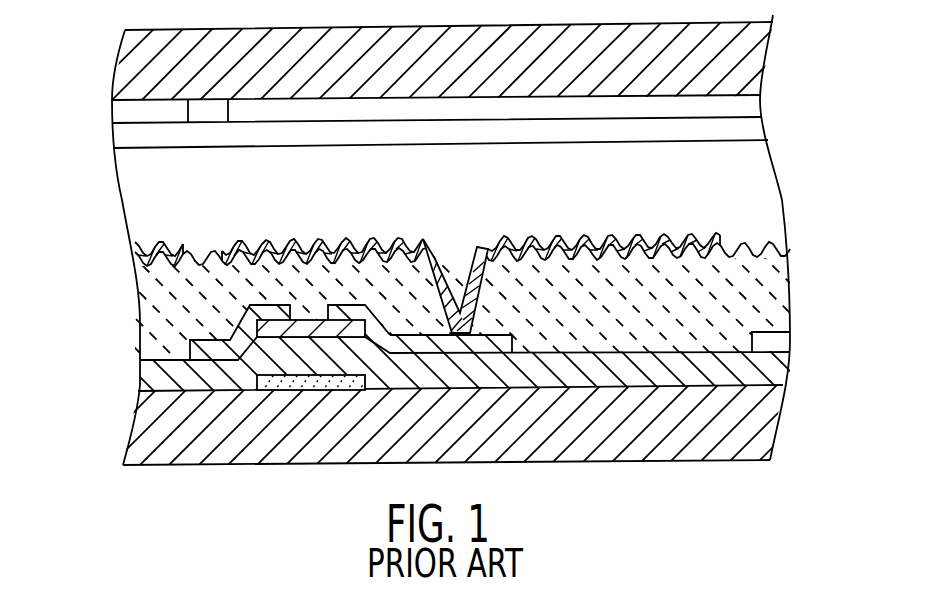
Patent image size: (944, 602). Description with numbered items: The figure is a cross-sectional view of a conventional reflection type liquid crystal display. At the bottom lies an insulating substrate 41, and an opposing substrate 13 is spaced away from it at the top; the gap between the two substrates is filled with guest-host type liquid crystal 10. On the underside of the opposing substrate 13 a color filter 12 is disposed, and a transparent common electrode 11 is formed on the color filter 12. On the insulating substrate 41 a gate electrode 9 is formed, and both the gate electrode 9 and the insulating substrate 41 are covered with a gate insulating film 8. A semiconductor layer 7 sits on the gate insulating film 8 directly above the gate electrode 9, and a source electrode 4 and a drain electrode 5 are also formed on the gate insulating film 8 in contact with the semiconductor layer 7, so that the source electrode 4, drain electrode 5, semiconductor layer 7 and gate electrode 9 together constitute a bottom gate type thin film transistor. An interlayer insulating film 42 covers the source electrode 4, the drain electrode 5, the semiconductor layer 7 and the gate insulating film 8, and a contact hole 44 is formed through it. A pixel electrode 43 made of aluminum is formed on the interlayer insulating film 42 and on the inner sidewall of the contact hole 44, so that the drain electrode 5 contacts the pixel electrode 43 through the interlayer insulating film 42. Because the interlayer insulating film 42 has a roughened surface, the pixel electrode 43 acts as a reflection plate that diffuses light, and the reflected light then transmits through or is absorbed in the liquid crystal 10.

The source electrode 4 is at (208, 342).
The drain electrode 5 is at (486, 345).
The semiconductor layer 7 is at (288, 318).
The gate insulating film 8 is at (750, 377).
The gate electrode 9 is at (330, 383).
The liquid crystal 10 is at (137, 200).
The transparent common electrode 11 is at (752, 128).
The color filter 12 is at (120, 116).
The opposing substrate 13 is at (725, 63).
The insulating substrate 41 is at (752, 425).
The interlayer insulating film 42 is at (750, 310).
The pixel electrode 43 is at (735, 235).
The contact hole 44 is at (462, 247).